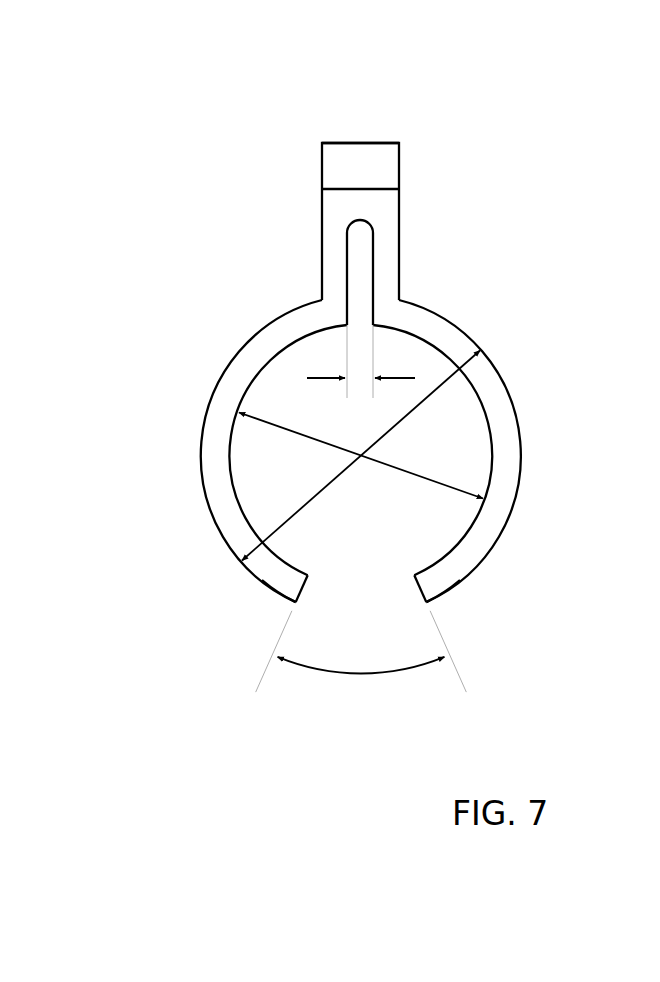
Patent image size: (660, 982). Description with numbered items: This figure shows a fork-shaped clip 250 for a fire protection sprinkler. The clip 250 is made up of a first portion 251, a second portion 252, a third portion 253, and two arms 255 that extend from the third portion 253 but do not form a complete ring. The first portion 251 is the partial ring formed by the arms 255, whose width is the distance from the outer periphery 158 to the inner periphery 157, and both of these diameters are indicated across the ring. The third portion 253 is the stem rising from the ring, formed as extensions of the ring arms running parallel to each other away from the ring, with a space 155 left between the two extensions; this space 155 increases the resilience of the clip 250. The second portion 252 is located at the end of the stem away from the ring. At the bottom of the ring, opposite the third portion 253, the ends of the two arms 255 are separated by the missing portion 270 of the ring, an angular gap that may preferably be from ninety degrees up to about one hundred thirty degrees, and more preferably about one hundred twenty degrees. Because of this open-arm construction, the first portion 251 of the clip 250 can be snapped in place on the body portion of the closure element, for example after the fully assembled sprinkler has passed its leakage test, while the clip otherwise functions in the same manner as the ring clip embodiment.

The clip 250 is at (247, 112).
The first portion 251 is at (522, 478).
The second portion 252 is at (399, 158).
The third portion 253 is at (399, 245).
The arms 255 is at (208, 443).
The space 155 is at (315, 378).
The inner periphery 157 is at (450, 483).
The outer periphery 158 is at (284, 521).
The missing portion of the ring 270 is at (358, 679).